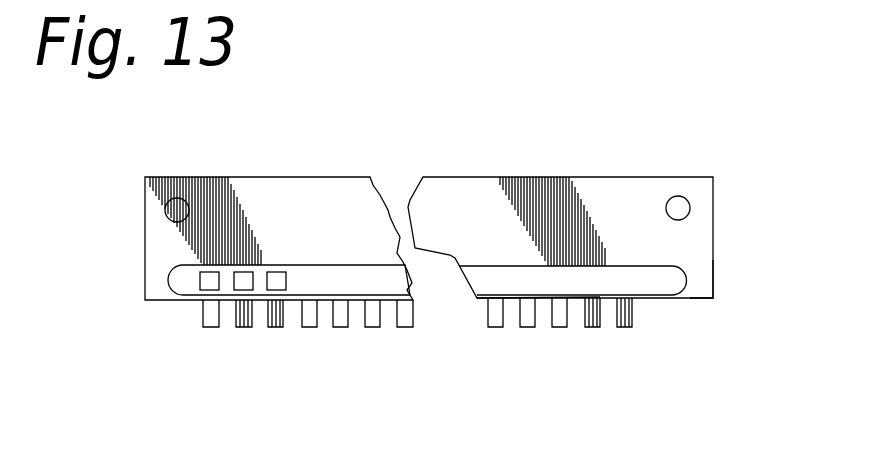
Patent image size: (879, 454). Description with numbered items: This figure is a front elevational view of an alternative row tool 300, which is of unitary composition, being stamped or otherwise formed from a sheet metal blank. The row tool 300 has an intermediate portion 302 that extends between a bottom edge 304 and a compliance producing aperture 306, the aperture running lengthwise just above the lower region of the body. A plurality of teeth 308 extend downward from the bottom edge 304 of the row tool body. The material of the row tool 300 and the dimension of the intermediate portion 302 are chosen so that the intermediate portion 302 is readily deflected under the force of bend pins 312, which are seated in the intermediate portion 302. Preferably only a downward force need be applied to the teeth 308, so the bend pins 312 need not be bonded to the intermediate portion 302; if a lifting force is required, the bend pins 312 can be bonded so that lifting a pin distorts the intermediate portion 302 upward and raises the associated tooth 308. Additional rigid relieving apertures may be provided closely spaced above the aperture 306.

The row tool 300 is at (490, 195).
The intermediate portion 302 is at (600, 297).
The bottom edge 304 is at (713, 298).
The compliance producing aperture 306 is at (618, 270).
The teeth 308 is at (272, 327).
The bend pins 312 is at (209, 272).